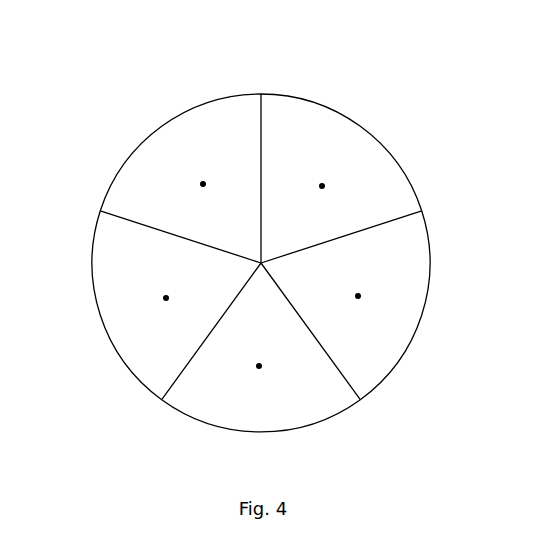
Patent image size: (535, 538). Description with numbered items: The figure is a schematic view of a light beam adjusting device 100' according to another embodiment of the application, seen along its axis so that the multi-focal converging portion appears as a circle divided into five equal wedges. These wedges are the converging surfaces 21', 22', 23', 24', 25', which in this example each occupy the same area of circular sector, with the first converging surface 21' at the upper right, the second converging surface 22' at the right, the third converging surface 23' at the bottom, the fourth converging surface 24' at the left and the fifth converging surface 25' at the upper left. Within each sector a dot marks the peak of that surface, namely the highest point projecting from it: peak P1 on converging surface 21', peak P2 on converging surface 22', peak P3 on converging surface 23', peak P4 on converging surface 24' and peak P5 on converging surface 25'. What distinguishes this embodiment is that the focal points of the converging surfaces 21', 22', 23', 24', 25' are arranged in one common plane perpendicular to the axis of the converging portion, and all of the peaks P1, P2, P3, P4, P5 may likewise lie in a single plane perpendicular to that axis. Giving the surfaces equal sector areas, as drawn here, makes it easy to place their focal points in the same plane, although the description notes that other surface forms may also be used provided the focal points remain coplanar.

The light beam adjusting device 100' is at (260, 211).
The converging surface 21' is at (341, 152).
The converging surface 22' is at (422, 305).
The converging surface 23' is at (261, 429).
The converging surface 24' is at (101, 305).
The converging surface 25' is at (170, 152).
The peak P1 is at (317, 174).
The peak P2 is at (357, 287).
The peak P3 is at (261, 357).
The peak P4 is at (174, 308).
The peak P5 is at (207, 196).